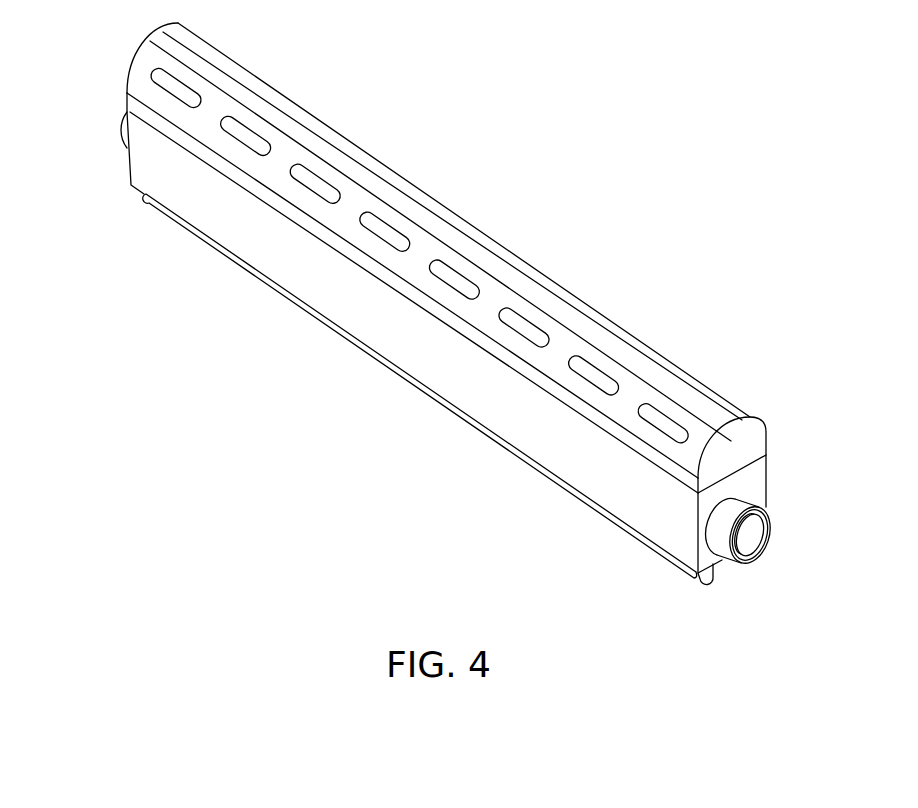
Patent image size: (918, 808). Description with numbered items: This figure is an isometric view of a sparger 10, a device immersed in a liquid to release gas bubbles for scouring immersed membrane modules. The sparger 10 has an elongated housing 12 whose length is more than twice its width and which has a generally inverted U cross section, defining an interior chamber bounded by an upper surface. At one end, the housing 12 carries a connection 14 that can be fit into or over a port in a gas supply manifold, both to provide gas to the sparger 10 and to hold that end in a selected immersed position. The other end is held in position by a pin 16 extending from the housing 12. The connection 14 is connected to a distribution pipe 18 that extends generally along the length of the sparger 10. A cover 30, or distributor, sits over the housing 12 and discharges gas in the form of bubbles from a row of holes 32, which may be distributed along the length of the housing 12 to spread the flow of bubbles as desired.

The sparger 10 is at (668, 191).
The housing 12 is at (396, 341).
The connection 14 is at (124, 127).
The pin 16 is at (750, 564).
The distribution pipe 18 is at (700, 580).
The cover 30 is at (471, 224).
The holes 32 is at (300, 192).